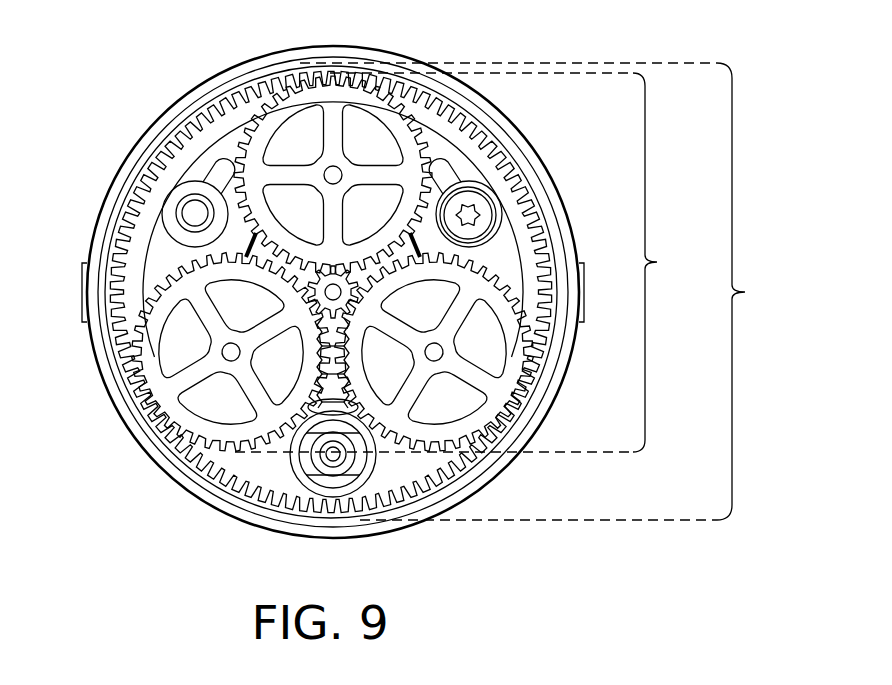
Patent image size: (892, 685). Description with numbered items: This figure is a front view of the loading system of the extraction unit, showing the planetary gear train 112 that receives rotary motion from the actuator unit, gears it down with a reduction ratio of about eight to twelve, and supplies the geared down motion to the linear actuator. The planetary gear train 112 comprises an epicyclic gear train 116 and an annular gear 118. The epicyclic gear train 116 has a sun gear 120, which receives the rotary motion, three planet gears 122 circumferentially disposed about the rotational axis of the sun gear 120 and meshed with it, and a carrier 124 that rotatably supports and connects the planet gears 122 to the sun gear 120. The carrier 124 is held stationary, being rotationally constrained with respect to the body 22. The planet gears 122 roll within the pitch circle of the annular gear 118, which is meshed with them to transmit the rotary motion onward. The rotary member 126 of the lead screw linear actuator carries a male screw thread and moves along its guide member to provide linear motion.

The body 22 is at (407, 175).
The planetary gear train 112 is at (545, 291).
The epicyclic gear train 116 is at (423, 262).
The annular gear 118 is at (140, 188).
The sun gear 120 is at (333, 292).
The planet gears 122 is at (515, 362).
The carrier 124 is at (258, 385).
The rotary member 126 is at (153, 134).